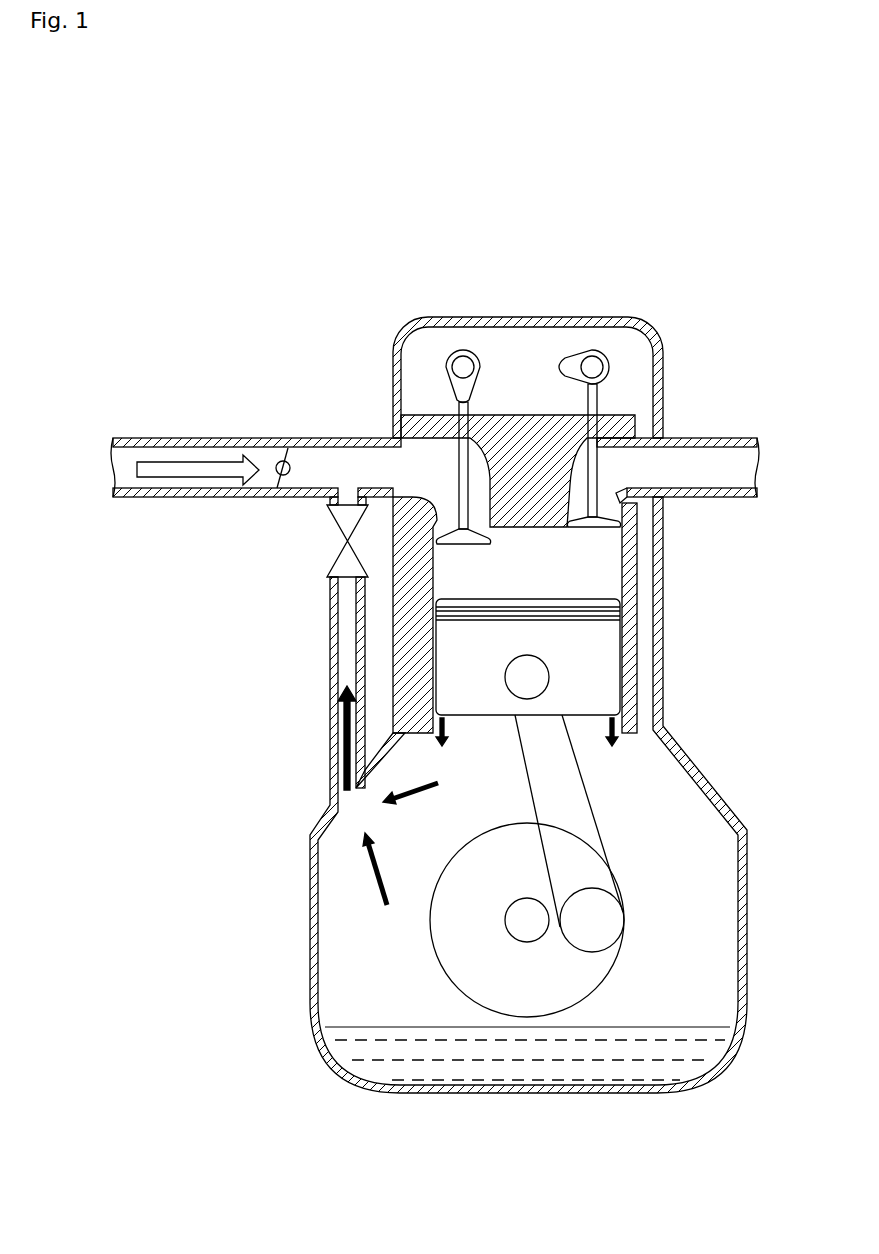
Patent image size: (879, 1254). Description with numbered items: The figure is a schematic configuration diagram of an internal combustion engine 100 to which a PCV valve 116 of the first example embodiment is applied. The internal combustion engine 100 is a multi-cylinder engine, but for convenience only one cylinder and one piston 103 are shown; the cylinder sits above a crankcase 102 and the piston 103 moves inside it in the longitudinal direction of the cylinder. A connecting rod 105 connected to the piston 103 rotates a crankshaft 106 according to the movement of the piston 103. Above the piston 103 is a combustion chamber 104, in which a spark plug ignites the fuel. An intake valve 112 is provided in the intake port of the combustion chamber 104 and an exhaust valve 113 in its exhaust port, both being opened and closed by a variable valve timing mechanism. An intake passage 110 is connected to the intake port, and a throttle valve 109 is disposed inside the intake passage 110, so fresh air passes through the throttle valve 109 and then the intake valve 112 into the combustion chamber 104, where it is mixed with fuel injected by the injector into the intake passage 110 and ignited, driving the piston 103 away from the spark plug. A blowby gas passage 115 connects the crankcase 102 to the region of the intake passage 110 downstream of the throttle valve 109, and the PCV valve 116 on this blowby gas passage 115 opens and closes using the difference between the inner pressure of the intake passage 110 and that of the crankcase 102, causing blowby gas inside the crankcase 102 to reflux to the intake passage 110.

The internal combustion engine 100 is at (684, 240).
The crankcase 102 is at (714, 790).
The piston 103 is at (585, 718).
The combustion chamber 104 is at (613, 573).
The connecting rod 105 is at (597, 827).
The crankshaft 106 is at (617, 958).
The throttle valve 109 is at (279, 490).
The intake passage 110 is at (180, 497).
The intake valve 112 is at (470, 545).
The exhaust valve 113 is at (577, 528).
The blowby gas passage 115 is at (330, 669).
The PCV valve 116 is at (330, 567).